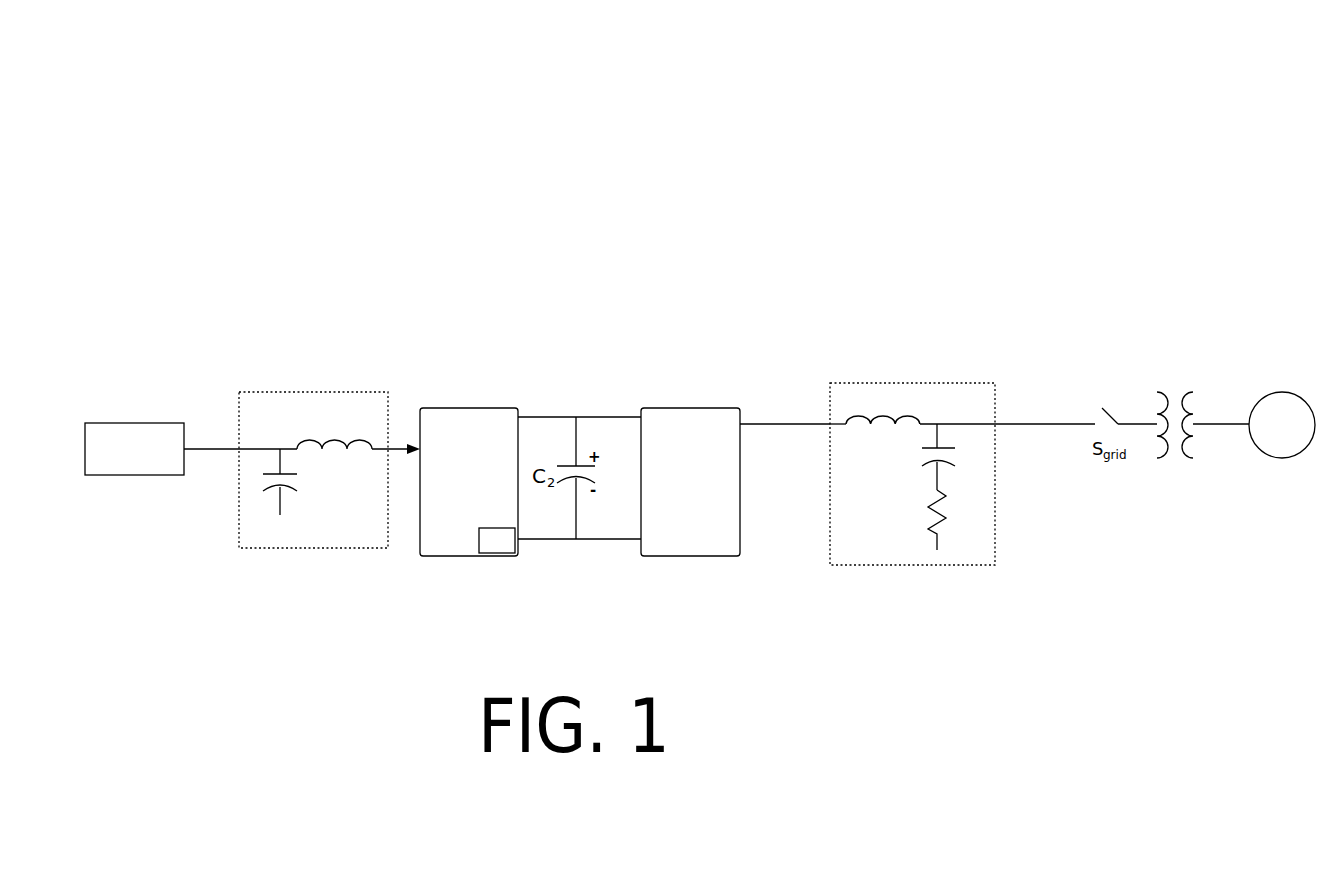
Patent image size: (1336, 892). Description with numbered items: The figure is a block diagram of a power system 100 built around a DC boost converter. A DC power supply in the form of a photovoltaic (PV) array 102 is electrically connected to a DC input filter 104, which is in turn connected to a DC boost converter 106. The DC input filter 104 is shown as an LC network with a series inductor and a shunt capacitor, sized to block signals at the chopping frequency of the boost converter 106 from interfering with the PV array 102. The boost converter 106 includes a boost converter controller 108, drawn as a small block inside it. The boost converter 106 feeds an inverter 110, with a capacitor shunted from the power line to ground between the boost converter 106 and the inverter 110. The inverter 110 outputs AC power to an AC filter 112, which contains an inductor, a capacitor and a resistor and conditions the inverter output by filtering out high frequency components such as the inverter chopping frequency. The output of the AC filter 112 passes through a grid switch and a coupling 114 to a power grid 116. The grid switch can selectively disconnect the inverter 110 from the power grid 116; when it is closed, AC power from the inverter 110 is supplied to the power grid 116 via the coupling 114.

The power system 100 is at (1267, 122).
The photovoltaic (PV) array 102 is at (134, 410).
The DC input filter 104 is at (284, 378).
The DC boost converter 106 is at (453, 393).
The boost converter controller 108 is at (502, 555).
The inverter 110 is at (692, 393).
The AC filter 112 is at (883, 370).
The coupling 114 is at (1184, 387).
The power grid 116 is at (1283, 379).